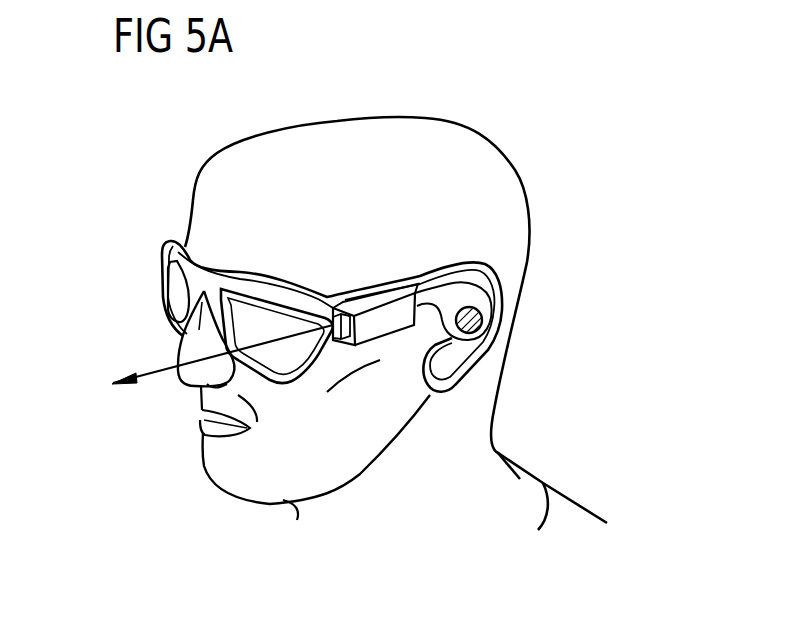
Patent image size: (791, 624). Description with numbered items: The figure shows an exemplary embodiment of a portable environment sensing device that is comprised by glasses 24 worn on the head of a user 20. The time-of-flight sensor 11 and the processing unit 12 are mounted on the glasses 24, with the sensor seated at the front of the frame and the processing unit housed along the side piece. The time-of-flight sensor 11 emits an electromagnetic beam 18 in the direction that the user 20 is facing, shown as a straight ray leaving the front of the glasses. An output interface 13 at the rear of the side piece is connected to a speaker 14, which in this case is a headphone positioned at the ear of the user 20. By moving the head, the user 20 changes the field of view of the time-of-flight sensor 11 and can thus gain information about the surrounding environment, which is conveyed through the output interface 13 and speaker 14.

The time-of-flight sensor 11 is at (335, 332).
The processing unit 12 is at (387, 313).
The output interface 13 is at (408, 310).
The speaker 14 is at (481, 329).
The electromagnetic beam 18 is at (150, 372).
The user 20 is at (340, 137).
The glasses 24 is at (174, 252).